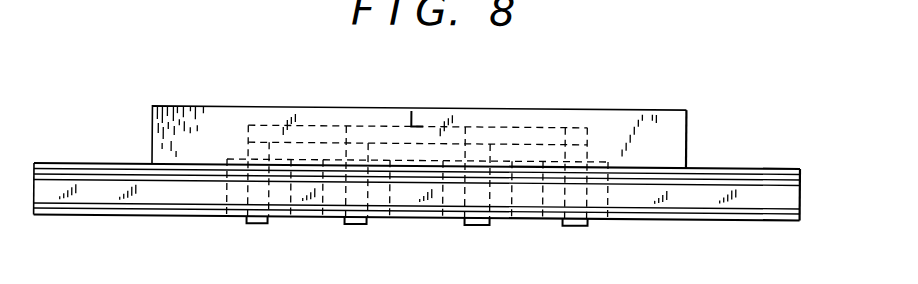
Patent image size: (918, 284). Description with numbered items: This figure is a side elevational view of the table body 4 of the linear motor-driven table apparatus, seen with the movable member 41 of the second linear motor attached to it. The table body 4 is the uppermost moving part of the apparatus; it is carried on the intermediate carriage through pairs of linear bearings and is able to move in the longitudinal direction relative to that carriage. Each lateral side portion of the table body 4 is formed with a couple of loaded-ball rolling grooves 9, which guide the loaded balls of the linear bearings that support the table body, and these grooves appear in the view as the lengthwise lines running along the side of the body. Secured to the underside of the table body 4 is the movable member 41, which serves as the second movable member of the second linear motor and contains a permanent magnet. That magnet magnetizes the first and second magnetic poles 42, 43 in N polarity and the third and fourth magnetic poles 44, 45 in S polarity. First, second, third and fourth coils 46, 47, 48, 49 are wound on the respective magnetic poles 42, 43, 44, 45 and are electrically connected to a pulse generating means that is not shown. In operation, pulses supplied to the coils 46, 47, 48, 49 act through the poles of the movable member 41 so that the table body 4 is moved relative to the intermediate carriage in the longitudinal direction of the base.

The table body 4 is at (687, 104).
The loaded-ball rolling grooves 9 is at (762, 180).
The movable member 41 is at (412, 107).
The first magnetic pole 42 is at (263, 222).
The second magnetic pole 43 is at (363, 222).
The third magnetic pole 44 is at (483, 222).
The fourth magnetic pole 45 is at (583, 222).
The first coil 46 is at (278, 158).
The second coil 47 is at (380, 158).
The third coil 48 is at (496, 158).
The fourth coil 49 is at (599, 158).